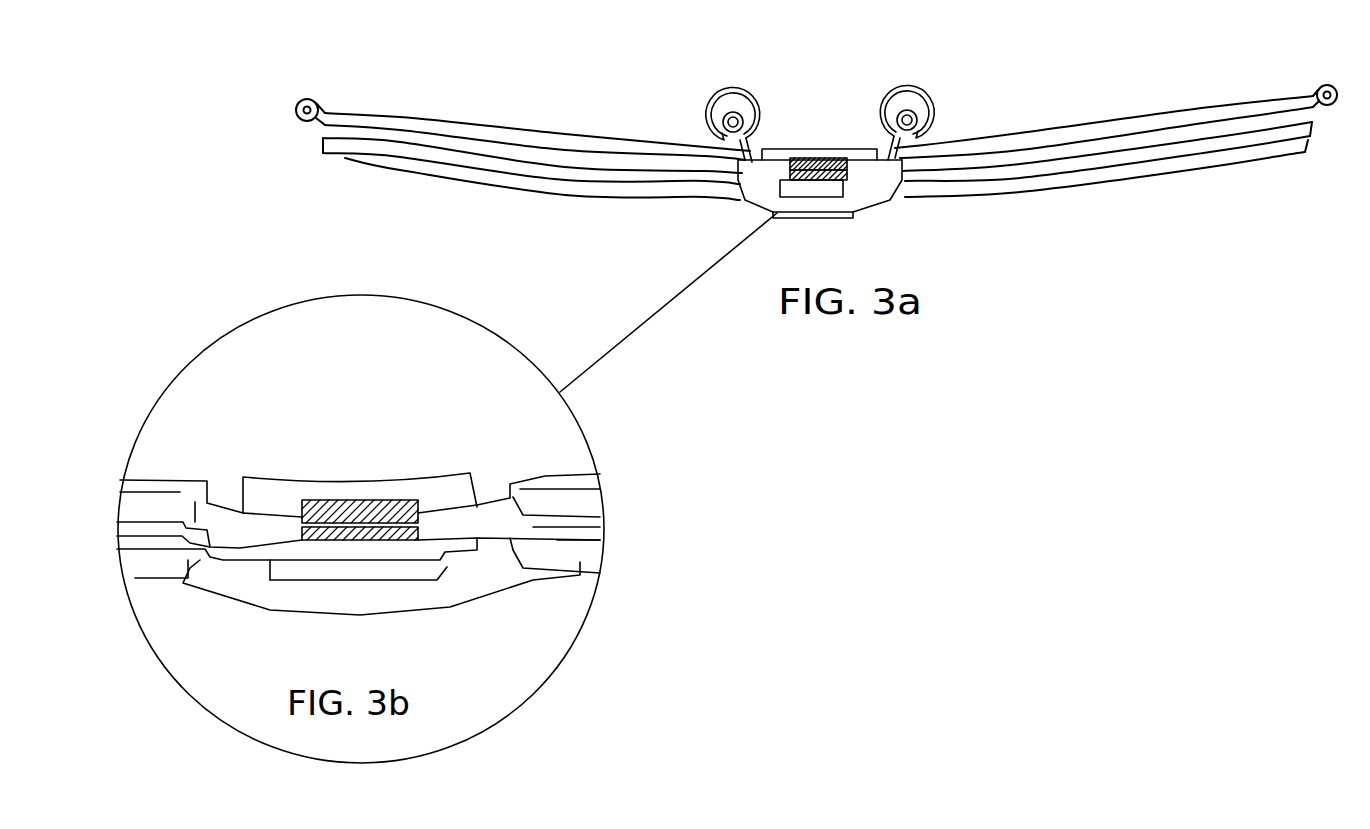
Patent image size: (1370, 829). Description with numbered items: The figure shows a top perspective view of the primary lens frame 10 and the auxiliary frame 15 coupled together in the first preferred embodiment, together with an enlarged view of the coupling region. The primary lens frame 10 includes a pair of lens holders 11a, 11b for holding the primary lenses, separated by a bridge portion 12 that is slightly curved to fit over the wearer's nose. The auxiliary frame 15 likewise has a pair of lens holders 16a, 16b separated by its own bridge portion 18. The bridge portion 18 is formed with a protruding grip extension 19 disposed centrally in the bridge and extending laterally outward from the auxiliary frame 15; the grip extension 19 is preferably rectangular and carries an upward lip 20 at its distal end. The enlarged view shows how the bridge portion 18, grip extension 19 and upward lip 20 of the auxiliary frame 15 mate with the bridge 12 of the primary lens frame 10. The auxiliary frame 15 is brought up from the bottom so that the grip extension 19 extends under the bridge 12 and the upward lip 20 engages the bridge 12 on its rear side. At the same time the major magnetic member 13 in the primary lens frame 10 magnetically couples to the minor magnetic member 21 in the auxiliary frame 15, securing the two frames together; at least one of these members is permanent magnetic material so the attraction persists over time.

In FIG. 3A, the primary lens frame 10 is at (1023, 115).
In FIG. 3B, the lens holder 11a is at (118, 515).
In FIG. 3B, the lens holder 11b is at (573, 500).
In FIG. 3A, the bridge portion 12 is at (760, 160).
In FIG. 3B, the bridge portion 12 is at (243, 533).
In FIG. 3A, the major magnetic member 13 is at (850, 213).
In FIG. 3B, the major magnetic member 13 is at (377, 540).
In FIG. 3A, the auxiliary frame 15 is at (1083, 193).
In FIG. 3B, the lens holder 16a is at (130, 598).
In FIG. 3B, the lens holder 16b is at (573, 562).
In FIG. 3A, the bridge portion 18 is at (810, 200).
In FIG. 3B, the bridge portion 18 is at (453, 593).
In FIG. 3B, the grip extension 19 is at (242, 447).
In FIG. 3B, the upward lip 20 is at (427, 480).
In FIG. 3A, the minor magnetic member 21 is at (815, 157).
In FIG. 3B, the minor magnetic member 21 is at (350, 503).